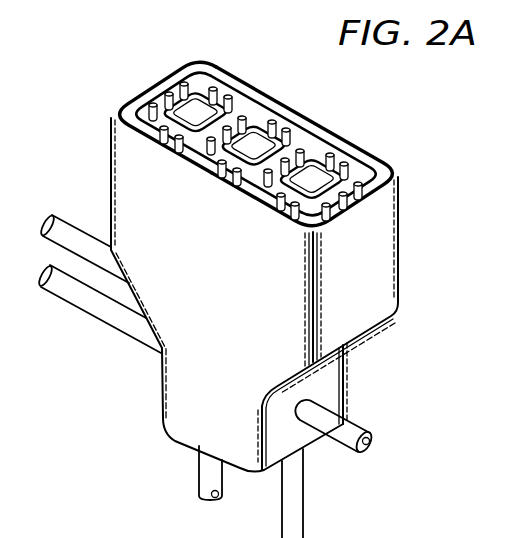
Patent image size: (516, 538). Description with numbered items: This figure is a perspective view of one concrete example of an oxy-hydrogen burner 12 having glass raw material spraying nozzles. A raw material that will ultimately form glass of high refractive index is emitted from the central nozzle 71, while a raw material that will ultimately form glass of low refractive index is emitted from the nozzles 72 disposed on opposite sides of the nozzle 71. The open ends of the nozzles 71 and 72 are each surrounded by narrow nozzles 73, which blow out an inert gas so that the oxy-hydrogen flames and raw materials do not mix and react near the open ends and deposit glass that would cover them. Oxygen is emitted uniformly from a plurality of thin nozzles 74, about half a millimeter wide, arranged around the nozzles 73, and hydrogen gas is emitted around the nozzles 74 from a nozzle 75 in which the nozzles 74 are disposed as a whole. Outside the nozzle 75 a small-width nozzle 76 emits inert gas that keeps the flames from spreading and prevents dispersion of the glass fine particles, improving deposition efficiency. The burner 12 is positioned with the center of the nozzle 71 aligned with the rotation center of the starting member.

The burner 12 is at (404, 242).
The nozzle 71 is at (317, 150).
The nozzles 72 is at (207, 108).
The narrow nozzles 73 is at (203, 87).
The nozzles 74 is at (382, 164).
The nozzle 75 is at (336, 136).
The nozzle 76 is at (146, 94).